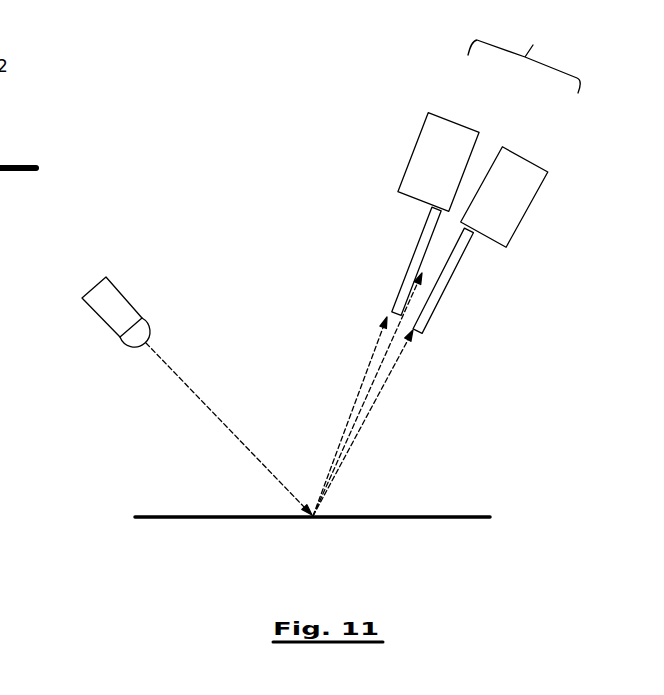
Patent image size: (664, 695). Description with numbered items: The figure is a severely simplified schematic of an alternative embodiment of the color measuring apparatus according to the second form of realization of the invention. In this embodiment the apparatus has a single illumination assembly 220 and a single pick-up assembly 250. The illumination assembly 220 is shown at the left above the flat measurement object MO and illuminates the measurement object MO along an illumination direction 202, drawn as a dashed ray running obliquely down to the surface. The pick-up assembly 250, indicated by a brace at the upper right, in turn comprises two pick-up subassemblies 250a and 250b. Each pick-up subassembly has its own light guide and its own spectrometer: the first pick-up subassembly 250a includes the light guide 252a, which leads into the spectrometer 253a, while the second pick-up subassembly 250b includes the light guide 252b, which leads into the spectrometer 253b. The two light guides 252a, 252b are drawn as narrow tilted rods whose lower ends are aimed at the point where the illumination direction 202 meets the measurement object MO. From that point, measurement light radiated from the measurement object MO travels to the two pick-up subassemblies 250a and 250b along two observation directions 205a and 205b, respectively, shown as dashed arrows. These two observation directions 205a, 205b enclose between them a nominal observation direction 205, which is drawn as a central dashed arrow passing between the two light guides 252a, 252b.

The pick-up assembly 250 is at (524, 52).
The pick-up subassembly 250a is at (367, 192).
The pick-up subassembly 250b is at (510, 228).
The spectrometer 253a is at (448, 140).
The spectrometer 253b is at (518, 170).
The light guide 252a is at (430, 225).
The light guide 252b is at (460, 258).
The nominal observation direction 205 is at (407, 310).
The observation direction 205a is at (377, 345).
The observation direction 205b is at (400, 357).
The illumination assembly 220 is at (113, 313).
The illumination direction 202 is at (197, 400).
The measurement object MO is at (445, 515).